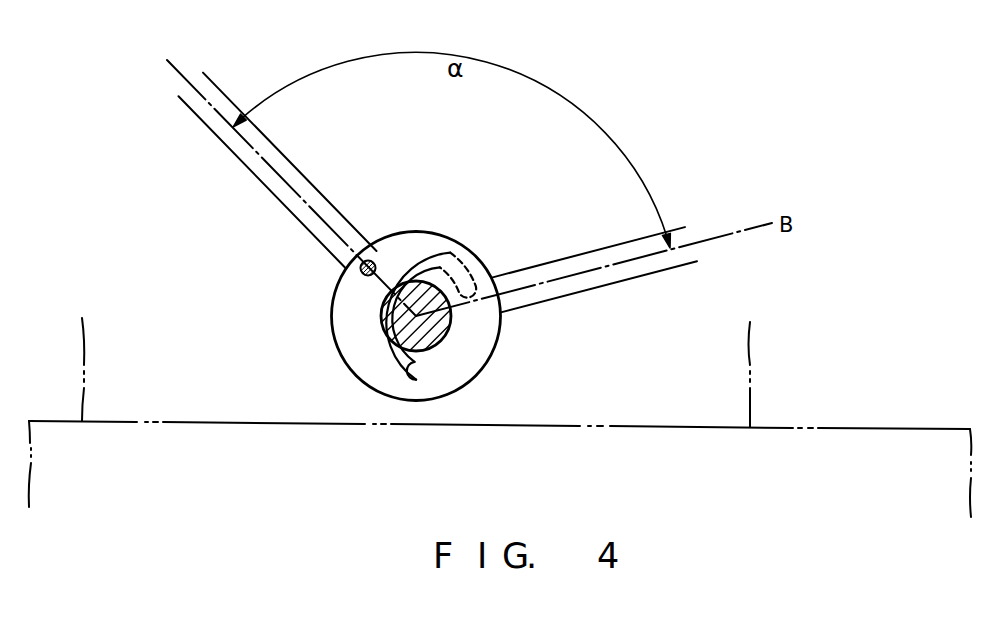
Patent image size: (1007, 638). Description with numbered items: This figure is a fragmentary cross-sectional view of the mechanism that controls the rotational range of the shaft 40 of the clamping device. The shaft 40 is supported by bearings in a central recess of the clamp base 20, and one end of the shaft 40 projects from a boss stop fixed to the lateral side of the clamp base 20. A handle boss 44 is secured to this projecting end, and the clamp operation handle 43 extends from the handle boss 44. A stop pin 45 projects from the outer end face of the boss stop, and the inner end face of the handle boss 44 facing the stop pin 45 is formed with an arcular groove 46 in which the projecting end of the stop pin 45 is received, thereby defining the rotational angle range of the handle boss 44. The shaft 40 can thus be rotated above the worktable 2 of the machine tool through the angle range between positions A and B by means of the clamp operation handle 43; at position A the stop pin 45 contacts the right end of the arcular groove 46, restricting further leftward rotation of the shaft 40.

The worktable 2 is at (970, 496).
The clamp base 20 is at (752, 358).
The shaft 40 is at (413, 350).
The clamp operation handle 43 is at (302, 173).
The handle boss 44 is at (487, 362).
The stop pin 45 is at (375, 262).
The arcular groove 46 is at (360, 358).